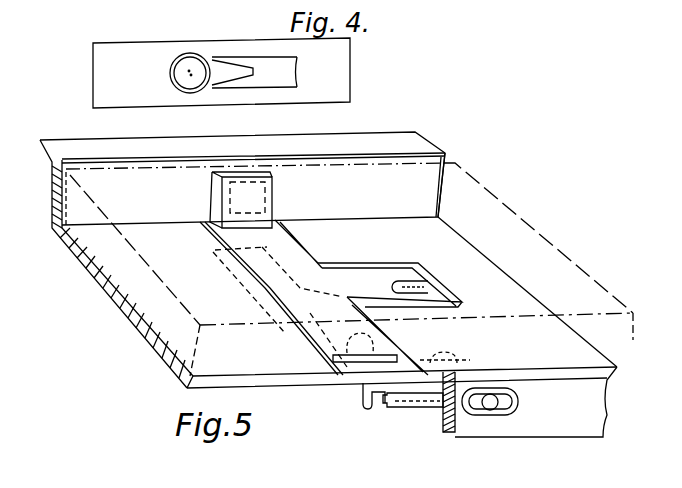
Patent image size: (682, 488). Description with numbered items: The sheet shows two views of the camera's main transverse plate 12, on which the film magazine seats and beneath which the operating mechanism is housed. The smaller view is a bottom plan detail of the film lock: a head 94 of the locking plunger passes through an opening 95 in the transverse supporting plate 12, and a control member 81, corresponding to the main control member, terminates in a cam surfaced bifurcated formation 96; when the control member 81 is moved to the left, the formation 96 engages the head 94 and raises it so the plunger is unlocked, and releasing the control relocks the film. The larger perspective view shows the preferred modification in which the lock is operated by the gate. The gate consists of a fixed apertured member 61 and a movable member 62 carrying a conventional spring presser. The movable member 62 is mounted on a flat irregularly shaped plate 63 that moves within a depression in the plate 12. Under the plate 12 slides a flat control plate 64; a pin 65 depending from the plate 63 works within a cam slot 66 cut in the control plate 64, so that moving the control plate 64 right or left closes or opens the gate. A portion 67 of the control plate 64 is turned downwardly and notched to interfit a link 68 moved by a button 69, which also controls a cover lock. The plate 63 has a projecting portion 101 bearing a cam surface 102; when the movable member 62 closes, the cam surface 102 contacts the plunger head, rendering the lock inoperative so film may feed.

In FIG. 4, the main transverse plate 12 is at (221, 73).
In FIG. 5, the main transverse plate 12 is at (110, 297).
In FIG. 4, the head 94 is at (190, 63).
In FIG. 4, the opening 95 is at (172, 62).
In FIG. 4, the cam surfaced bifurcated formation 96 is at (226, 62).
In FIG. 4, the control member 81 is at (286, 70).
In FIG. 5, the fixed apertured member 61 is at (222, 190).
In FIG. 5, the movable member 62 is at (265, 218).
In FIG. 5, the flat irregularly shaped plate 63 is at (297, 267).
In FIG. 5, the flat control plate 64 is at (432, 340).
In FIG. 5, the pin 65 is at (352, 384).
In FIG. 5, the cam slot 66 is at (303, 348).
In FIG. 5, the downwardly turned portion 67 is at (375, 404).
In FIG. 5, the link 68 is at (422, 406).
In FIG. 5, the button 69 is at (490, 409).
In FIG. 5, the projecting portion 101 is at (388, 253).
In FIG. 5, the cam surface 102 is at (398, 282).